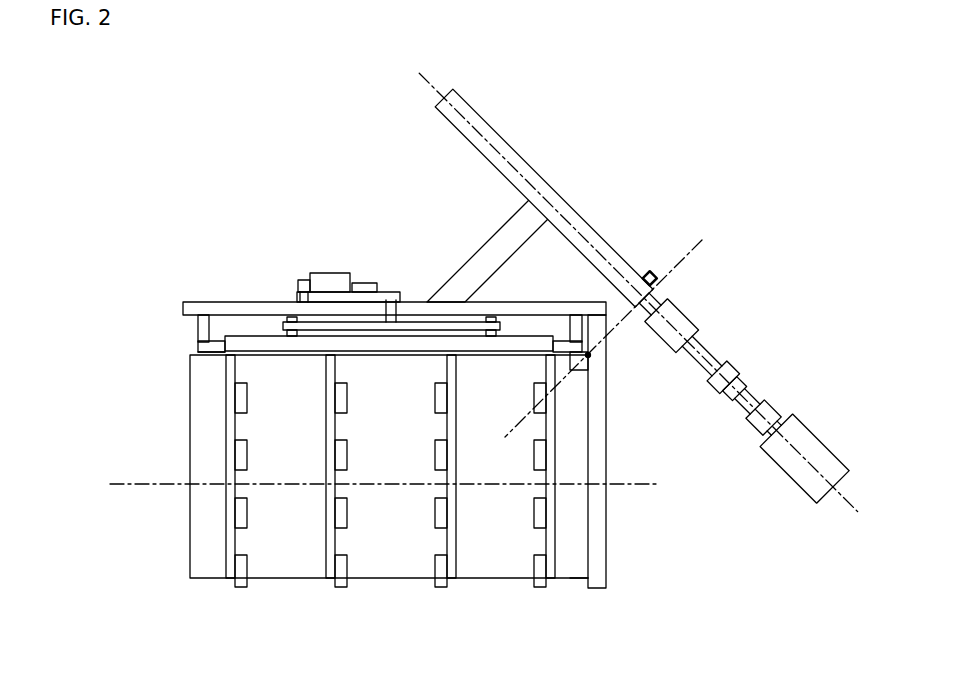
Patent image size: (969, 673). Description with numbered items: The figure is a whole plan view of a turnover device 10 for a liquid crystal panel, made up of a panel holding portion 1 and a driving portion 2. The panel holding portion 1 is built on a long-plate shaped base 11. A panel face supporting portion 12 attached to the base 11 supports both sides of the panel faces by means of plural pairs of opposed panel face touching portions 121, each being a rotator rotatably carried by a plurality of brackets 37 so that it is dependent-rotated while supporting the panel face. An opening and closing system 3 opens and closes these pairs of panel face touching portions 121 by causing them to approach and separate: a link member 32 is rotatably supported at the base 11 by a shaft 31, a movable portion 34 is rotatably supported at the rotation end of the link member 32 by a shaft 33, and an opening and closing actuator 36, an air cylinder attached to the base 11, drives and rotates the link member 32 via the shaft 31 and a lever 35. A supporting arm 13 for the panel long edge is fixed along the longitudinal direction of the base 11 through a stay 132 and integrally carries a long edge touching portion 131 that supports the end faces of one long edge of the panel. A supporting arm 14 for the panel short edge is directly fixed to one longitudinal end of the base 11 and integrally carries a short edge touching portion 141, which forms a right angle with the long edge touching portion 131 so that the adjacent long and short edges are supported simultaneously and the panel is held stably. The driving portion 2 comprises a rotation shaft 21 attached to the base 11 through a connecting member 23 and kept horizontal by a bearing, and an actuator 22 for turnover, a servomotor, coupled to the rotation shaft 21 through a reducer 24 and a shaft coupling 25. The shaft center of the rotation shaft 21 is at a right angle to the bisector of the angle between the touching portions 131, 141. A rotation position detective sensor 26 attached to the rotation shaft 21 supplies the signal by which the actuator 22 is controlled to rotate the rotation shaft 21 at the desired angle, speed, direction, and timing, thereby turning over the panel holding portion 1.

The turnover device 10 is at (222, 170).
The panel holding portion 1 is at (247, 258).
The driving portion 2 is at (572, 166).
The opening and closing system 3 is at (313, 258).
The base 11 is at (232, 300).
The panel face supporting portion 12 is at (222, 432).
The supporting arm 13 is at (200, 348).
The supporting arm 14 is at (600, 590).
The rotation shaft 21 is at (483, 126).
The actuator for turnover 22 is at (822, 437).
The connecting member 23 is at (503, 240).
The reducer 24 is at (780, 408).
The shaft coupling 25 is at (737, 362).
The rotation position detective sensor 26 is at (686, 308).
The shaft 31 is at (392, 300).
The link member 32 is at (447, 322).
The shaft 33 is at (292, 317).
The movable portion 34 is at (390, 344).
The lever 35 is at (388, 291).
The opening and closing actuator 36 is at (330, 273).
The bracket 37 is at (236, 544).
The panel face touching portion 121 is at (248, 512).
The long edge touching portion 131 is at (213, 356).
The stay 132 is at (197, 322).
The short edge touching portion 141 is at (584, 580).